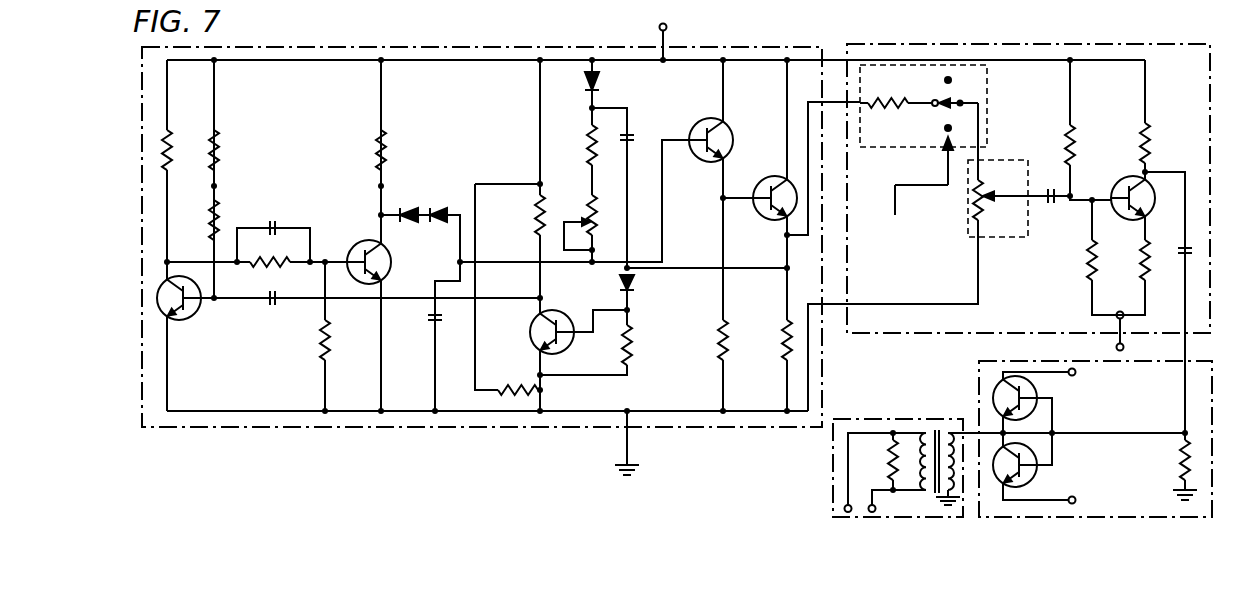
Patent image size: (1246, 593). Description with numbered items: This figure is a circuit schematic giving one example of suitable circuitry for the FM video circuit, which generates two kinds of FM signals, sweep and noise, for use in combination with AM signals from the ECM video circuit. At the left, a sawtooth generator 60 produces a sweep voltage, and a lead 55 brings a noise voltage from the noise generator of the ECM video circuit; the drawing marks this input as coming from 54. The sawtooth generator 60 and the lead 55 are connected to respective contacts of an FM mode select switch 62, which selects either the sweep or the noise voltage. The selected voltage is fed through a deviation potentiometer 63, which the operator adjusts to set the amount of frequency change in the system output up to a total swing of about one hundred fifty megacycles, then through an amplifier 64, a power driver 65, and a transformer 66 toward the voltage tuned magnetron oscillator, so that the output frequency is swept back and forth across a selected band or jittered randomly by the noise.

The sawtooth generator 60 is at (505, 20).
The FM mode select switch 62 is at (988, 90).
The deviation potentiometer 63 is at (1007, 238).
The amplifier 64 is at (1132, 167).
The power driver 65 is at (978, 388).
The transformer 66 is at (883, 417).
The lead 55 is at (946, 173).
The input from element 54 is at (891, 226).